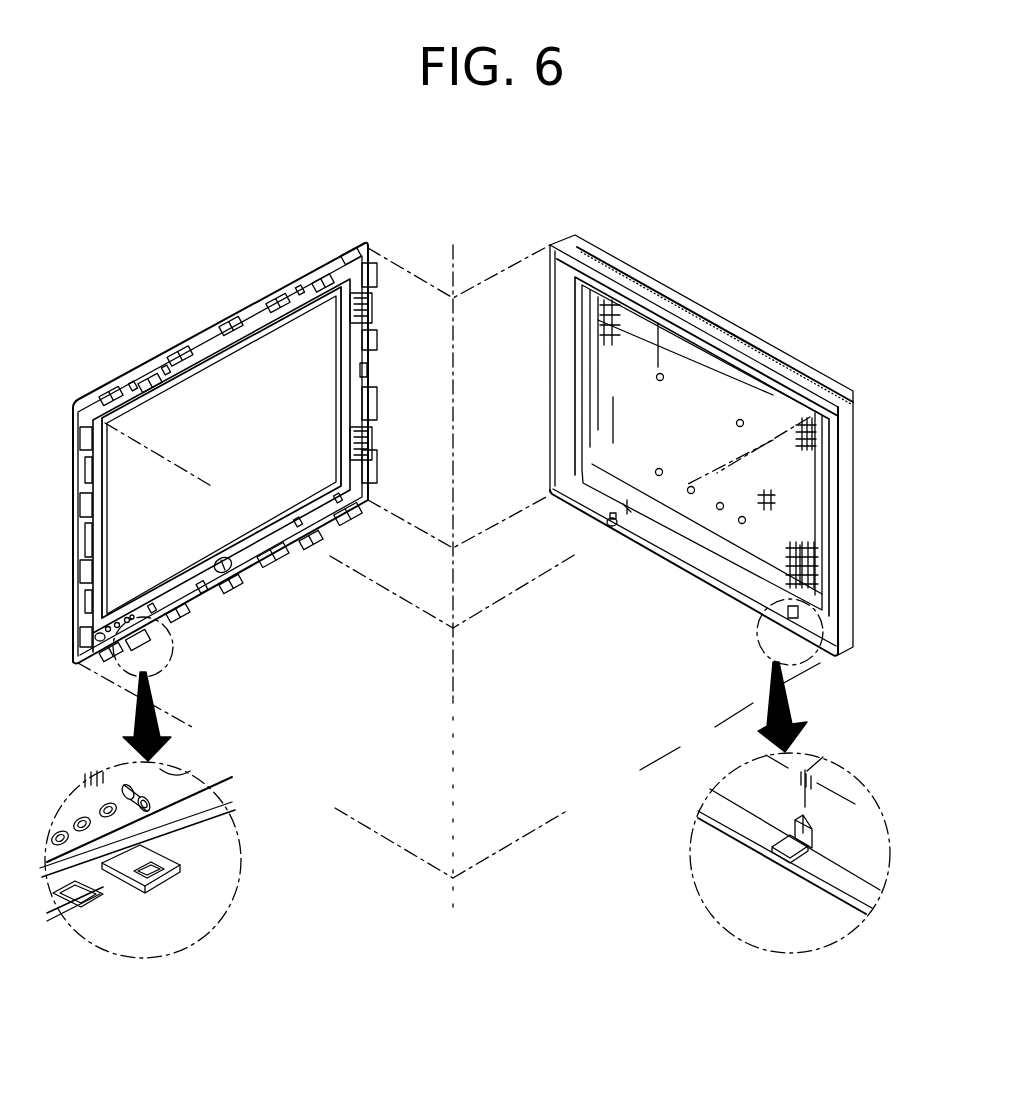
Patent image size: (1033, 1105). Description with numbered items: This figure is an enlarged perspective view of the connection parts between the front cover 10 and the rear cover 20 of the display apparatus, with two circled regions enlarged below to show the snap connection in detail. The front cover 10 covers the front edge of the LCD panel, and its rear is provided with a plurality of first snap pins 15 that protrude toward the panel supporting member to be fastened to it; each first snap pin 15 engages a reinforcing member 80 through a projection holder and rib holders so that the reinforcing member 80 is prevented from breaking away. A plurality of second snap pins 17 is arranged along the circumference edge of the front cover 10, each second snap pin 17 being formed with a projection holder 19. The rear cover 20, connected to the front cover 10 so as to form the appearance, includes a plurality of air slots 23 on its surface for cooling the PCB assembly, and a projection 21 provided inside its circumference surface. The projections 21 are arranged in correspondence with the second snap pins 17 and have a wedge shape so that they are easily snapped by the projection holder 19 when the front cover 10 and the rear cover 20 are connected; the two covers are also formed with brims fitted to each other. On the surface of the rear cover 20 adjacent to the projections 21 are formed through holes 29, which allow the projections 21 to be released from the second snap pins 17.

The front cover 10 is at (218, 322).
The first snap pin 15 is at (378, 305).
The second snap pin 17 is at (150, 380).
The projection holder 19 is at (150, 872).
The rear cover 20 is at (662, 290).
The projection 21 is at (612, 527).
The air slot 23 is at (742, 420).
The through hole 29 is at (798, 614).
The reinforcing member 80 is at (343, 322).